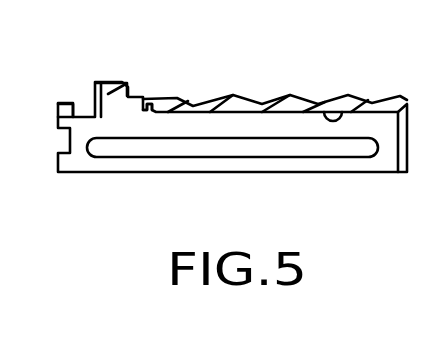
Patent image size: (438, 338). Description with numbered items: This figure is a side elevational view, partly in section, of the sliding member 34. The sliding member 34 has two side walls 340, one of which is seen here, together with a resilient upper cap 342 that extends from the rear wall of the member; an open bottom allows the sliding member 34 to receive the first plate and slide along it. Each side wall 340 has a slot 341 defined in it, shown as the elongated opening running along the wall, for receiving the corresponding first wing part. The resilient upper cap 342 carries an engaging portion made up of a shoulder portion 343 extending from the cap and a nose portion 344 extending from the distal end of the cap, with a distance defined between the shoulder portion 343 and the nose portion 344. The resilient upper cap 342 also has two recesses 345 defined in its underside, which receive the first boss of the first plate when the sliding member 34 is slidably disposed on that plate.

The sliding member 34 is at (268, 88).
The side wall 340 is at (380, 127).
The slot 341 is at (263, 147).
The resilient upper cap 342 is at (203, 107).
The shoulder portion 343 is at (115, 90).
The nose portion 344 is at (63, 102).
The recess 345 is at (323, 110).